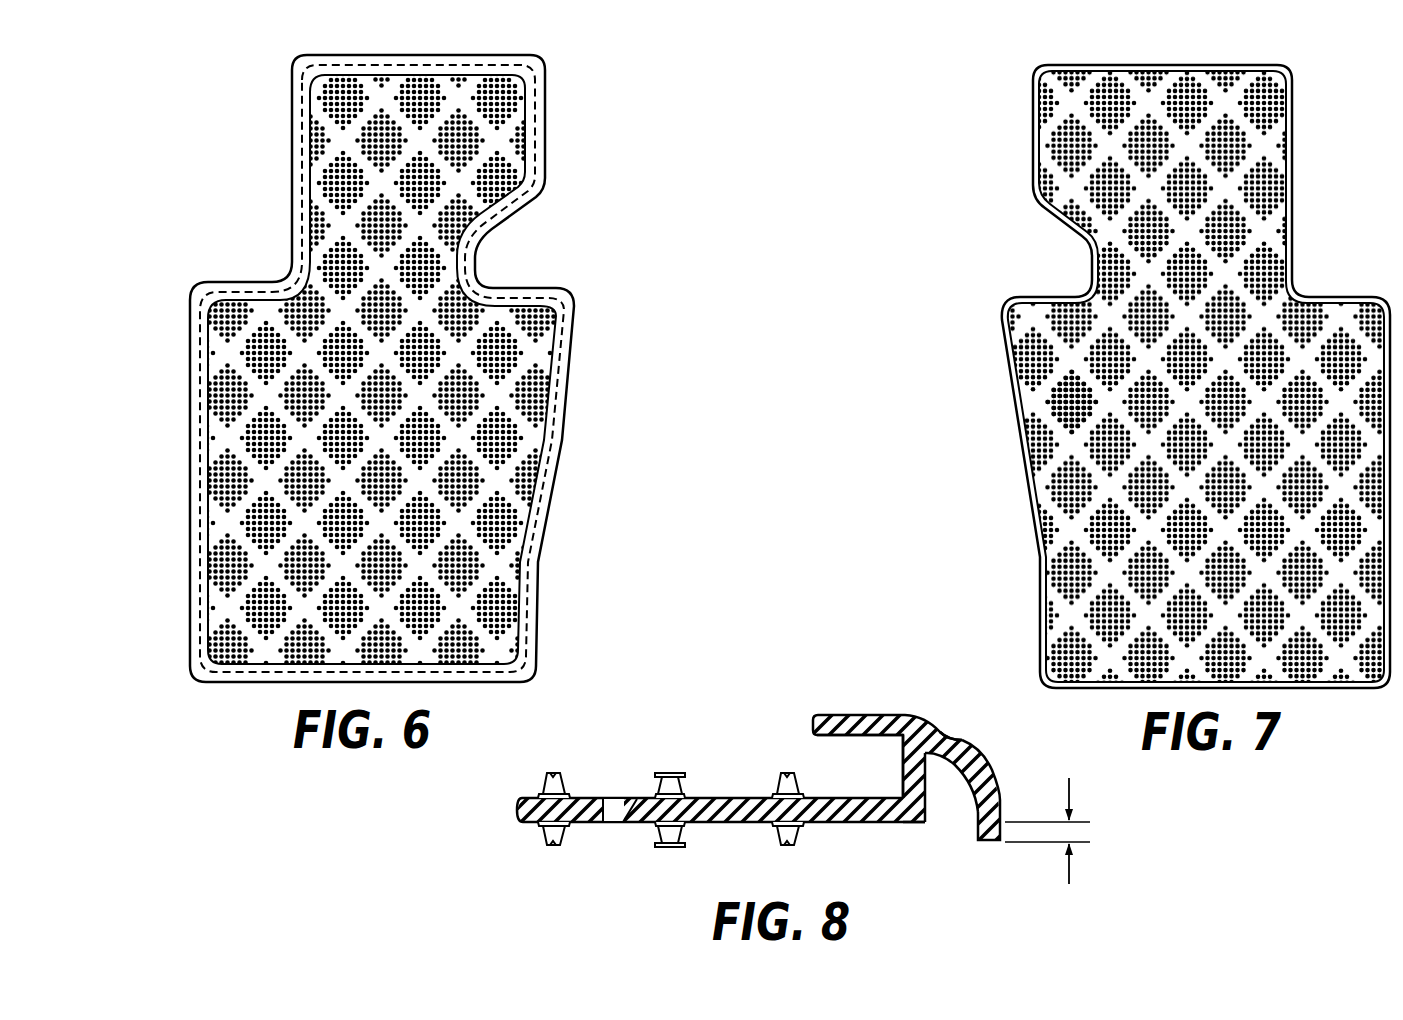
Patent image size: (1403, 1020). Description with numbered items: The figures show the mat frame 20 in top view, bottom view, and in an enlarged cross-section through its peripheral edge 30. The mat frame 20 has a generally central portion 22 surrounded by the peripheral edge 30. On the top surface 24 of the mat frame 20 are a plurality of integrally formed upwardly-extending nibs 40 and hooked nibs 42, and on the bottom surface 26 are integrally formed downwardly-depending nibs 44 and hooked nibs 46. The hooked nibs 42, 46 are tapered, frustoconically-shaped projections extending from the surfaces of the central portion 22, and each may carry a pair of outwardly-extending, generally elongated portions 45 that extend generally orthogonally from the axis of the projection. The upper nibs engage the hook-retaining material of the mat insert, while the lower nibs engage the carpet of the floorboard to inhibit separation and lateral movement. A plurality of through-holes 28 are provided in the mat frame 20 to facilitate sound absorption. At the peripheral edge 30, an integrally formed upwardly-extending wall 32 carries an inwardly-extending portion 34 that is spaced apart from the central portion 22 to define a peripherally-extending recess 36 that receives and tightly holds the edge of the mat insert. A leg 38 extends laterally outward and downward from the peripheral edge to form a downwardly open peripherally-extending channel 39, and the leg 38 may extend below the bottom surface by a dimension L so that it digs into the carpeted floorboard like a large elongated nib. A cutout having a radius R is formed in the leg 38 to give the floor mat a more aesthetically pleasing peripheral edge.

In FIG. 6, the mat frame 20 is at (416, 368).
In FIG. 7, the mat frame 20 is at (1163, 376).
In FIG. 8, the mat frame 20 is at (814, 772).
In FIG. 6, the central portion 22 is at (534, 351).
In FIG. 7, the central portion 22 is at (1067, 332).
In FIG. 8, the central portion 22 is at (592, 796).
In FIG. 6, the top surface 24 is at (530, 440).
In FIG. 8, the top surface 24 is at (729, 797).
In FIG. 7, the bottom surface 26 is at (1067, 407).
In FIG. 8, the bottom surface 26 is at (731, 823).
In FIG. 8, the through-holes 28 is at (623, 822).
In FIG. 6, the peripheral edge 30 is at (515, 228).
In FIG. 7, the peripheral edge 30 is at (1063, 230).
In FIG. 8, the peripheral edge 30 is at (998, 749).
In FIG. 8, the upwardly-extending wall 32 is at (910, 775).
In FIG. 8, the inwardly-extending portion 34 is at (846, 719).
In FIG. 8, the peripherally-extending recess 36 is at (830, 763).
In FIG. 8, the leg 38 is at (994, 802).
In FIG. 8, the peripherally-extending channel 39 is at (948, 818).
In FIG. 8, the upwardly-extending nibs 40 is at (785, 775).
In FIG. 8, the hooked nibs 42 is at (553, 775).
In FIG. 8, the downwardly-depending nibs 44 is at (787, 846).
In FIG. 8, the outwardly-extending elongated portions 45 is at (662, 773).
In FIG. 8, the hooked nibs 46 is at (553, 846).
In FIG. 8, the radius R is at (951, 732).
In FIG. 8, the lip height dimension L is at (1072, 877).